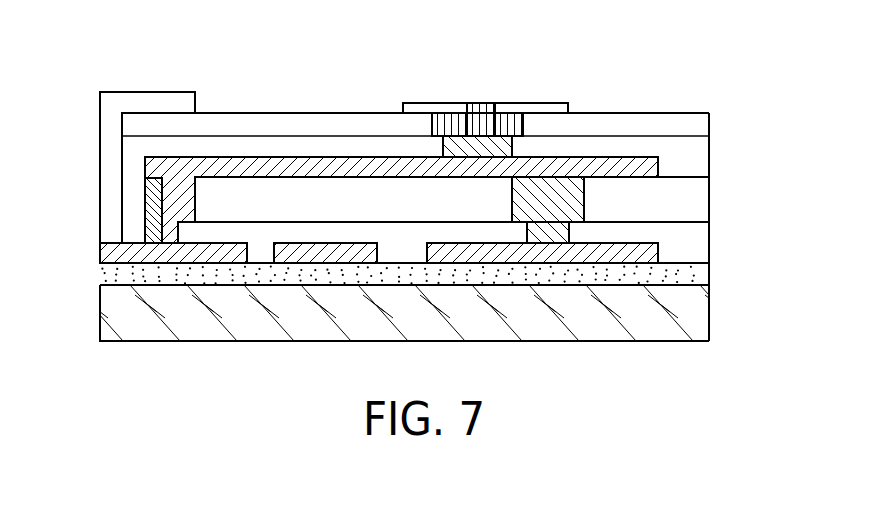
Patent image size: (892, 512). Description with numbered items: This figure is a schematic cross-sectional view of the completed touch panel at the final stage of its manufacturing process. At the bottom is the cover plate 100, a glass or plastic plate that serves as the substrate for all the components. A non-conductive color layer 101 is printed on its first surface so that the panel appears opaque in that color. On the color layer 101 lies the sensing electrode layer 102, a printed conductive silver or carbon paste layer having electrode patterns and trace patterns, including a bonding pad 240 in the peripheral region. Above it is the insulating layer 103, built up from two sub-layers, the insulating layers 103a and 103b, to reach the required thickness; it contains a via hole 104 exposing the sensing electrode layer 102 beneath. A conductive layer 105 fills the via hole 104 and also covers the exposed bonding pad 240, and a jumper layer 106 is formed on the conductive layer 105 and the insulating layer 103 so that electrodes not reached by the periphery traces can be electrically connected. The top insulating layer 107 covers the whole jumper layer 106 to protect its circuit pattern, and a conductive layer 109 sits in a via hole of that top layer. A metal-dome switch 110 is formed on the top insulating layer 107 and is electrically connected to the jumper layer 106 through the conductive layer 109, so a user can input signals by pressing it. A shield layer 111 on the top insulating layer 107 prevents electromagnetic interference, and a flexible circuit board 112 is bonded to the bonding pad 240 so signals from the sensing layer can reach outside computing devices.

The cover plate 100 is at (705, 318).
The color layer 101 is at (703, 277).
The sensing electrode layer 102 is at (625, 253).
The insulating layer 103 is at (510, 211).
The insulating layer 103a is at (482, 230).
The insulating layer 103b is at (702, 200).
The via hole 104 is at (587, 198).
The conductive layer 105 is at (547, 190).
The jumper layer 106 is at (372, 163).
The top insulating layer 107 is at (697, 162).
The conductive layer 109 is at (505, 140).
The metal-dome switch 110 is at (440, 125).
The shield layer 111 is at (697, 125).
The flexible circuit board 112 is at (115, 100).
The bonding pad 240 is at (103, 252).